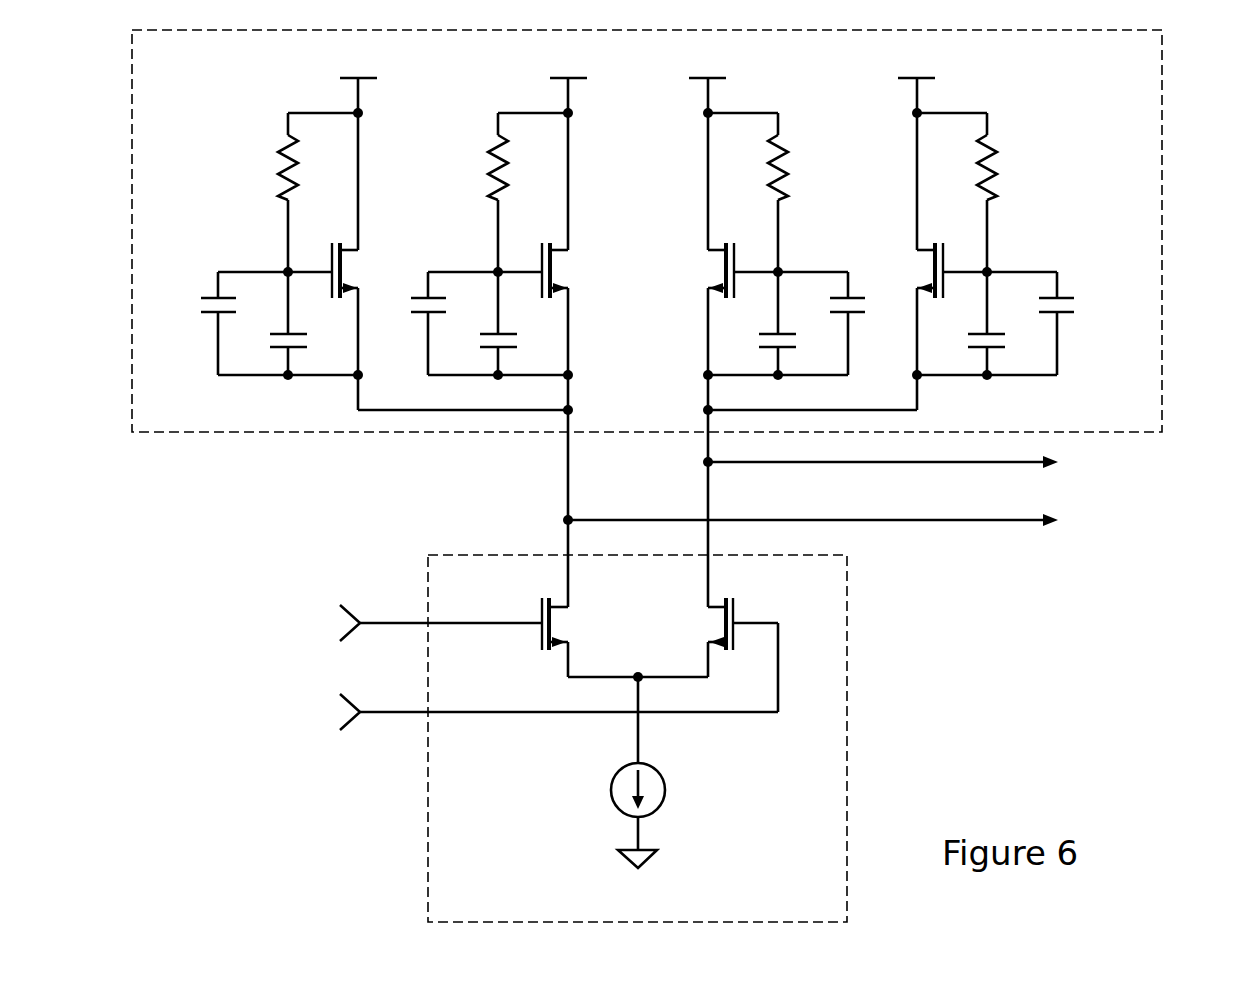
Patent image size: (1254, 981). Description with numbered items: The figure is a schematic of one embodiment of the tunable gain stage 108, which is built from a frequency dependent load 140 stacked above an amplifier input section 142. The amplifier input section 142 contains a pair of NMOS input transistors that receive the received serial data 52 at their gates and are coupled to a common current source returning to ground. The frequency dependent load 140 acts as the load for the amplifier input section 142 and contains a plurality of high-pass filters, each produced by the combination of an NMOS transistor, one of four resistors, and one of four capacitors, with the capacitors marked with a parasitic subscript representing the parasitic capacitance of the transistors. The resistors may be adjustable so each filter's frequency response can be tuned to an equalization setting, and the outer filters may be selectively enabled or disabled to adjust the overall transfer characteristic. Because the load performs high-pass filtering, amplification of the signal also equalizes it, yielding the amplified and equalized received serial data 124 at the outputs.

The frequency dependent load 140 is at (647, 318).
The amplifier input section 142 is at (603, 738).
The amplified and equalized received serial data 124 is at (889, 489).
The received serial data 52 is at (249, 667).
The tunable gain stage 108 is at (1125, 900).